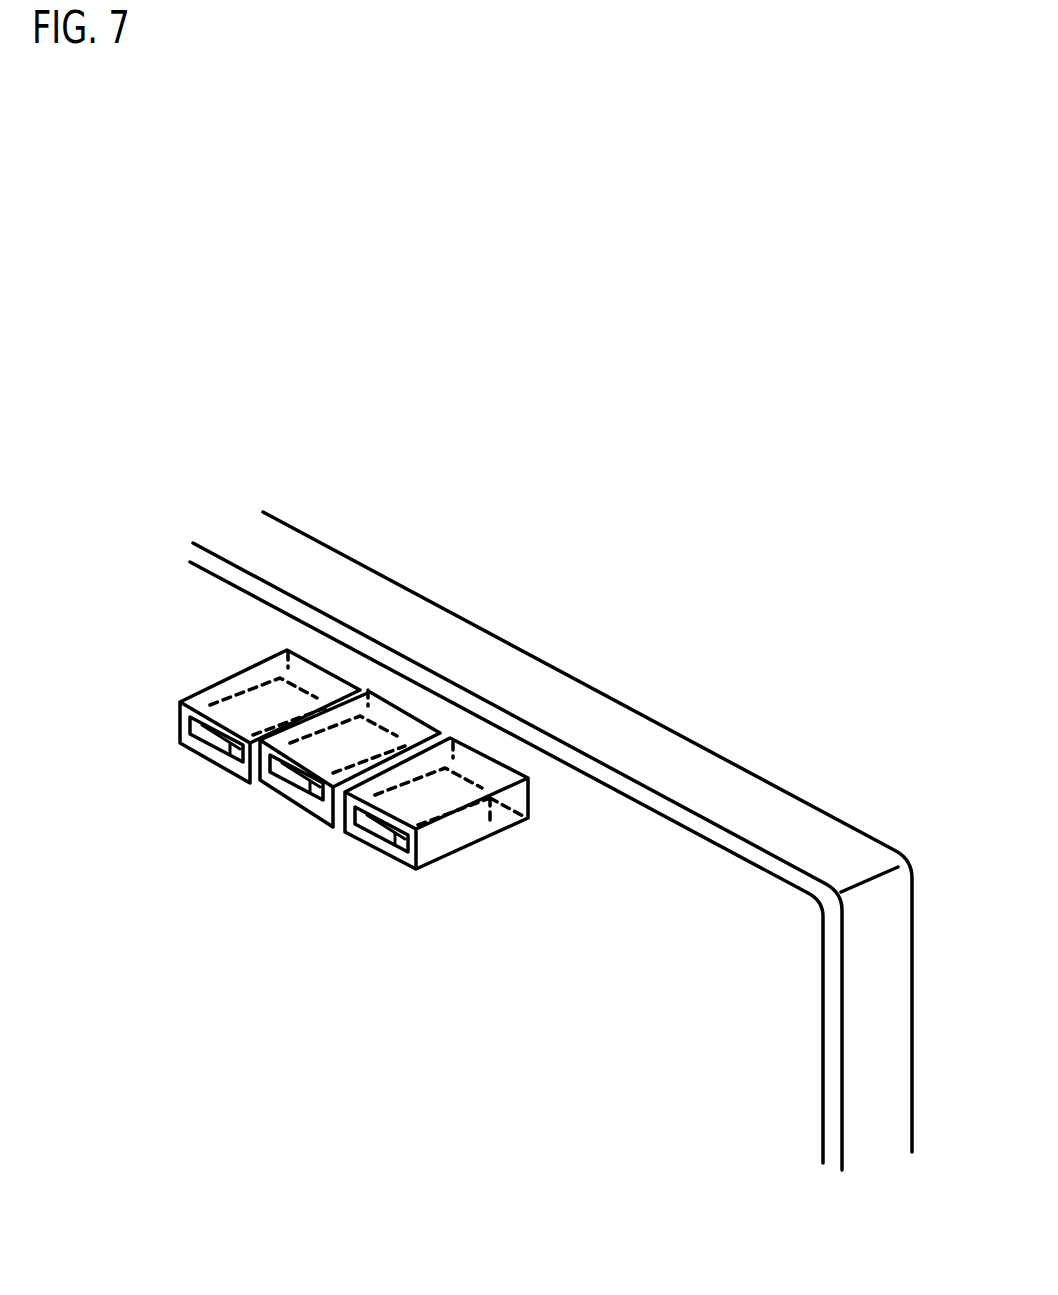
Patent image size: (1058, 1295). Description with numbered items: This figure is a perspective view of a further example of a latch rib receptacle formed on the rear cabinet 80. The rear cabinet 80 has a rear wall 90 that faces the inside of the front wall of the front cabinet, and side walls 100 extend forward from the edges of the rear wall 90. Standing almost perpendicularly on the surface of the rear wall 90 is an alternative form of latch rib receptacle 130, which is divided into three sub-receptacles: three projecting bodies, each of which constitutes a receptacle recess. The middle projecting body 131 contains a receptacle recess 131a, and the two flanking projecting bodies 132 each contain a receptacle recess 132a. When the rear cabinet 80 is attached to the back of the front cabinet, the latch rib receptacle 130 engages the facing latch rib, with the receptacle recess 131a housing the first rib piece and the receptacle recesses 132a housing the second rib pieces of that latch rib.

The rear cabinet 80 is at (338, 548).
The side walls 100 is at (553, 690).
The rear wall 90 is at (705, 882).
The latch rib receptacle 130 is at (346, 793).
The projecting body 131 is at (330, 725).
The receptacle recess 131a is at (277, 795).
The projecting bodies 132 is at (228, 729).
The receptacle recesses 132a is at (197, 752).